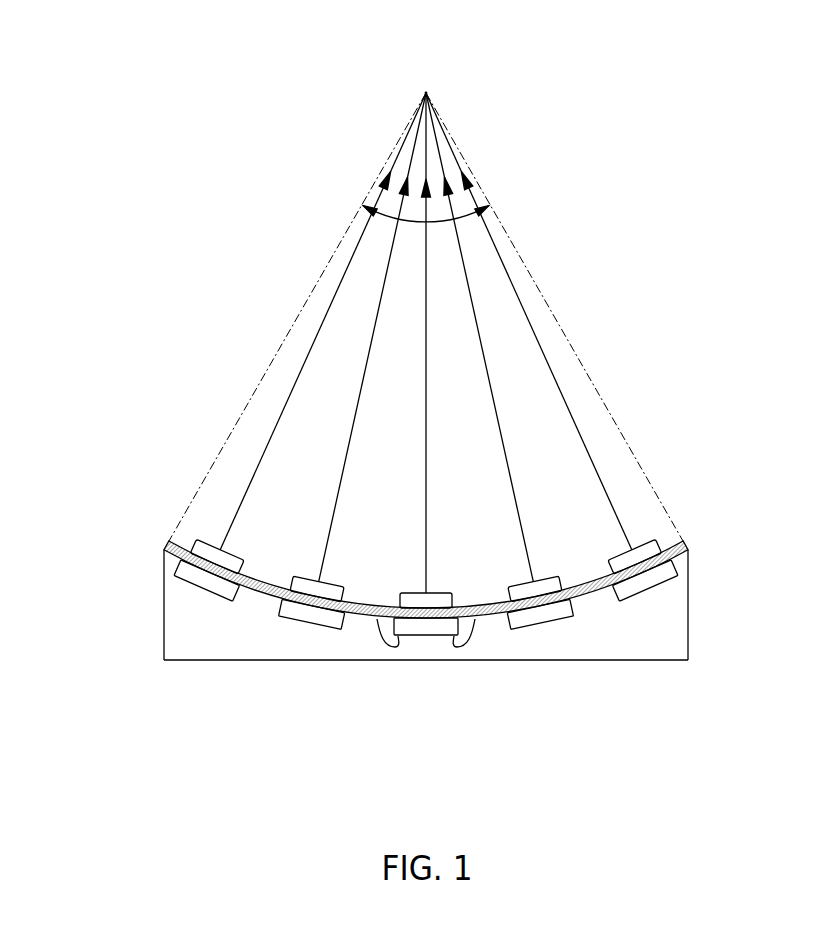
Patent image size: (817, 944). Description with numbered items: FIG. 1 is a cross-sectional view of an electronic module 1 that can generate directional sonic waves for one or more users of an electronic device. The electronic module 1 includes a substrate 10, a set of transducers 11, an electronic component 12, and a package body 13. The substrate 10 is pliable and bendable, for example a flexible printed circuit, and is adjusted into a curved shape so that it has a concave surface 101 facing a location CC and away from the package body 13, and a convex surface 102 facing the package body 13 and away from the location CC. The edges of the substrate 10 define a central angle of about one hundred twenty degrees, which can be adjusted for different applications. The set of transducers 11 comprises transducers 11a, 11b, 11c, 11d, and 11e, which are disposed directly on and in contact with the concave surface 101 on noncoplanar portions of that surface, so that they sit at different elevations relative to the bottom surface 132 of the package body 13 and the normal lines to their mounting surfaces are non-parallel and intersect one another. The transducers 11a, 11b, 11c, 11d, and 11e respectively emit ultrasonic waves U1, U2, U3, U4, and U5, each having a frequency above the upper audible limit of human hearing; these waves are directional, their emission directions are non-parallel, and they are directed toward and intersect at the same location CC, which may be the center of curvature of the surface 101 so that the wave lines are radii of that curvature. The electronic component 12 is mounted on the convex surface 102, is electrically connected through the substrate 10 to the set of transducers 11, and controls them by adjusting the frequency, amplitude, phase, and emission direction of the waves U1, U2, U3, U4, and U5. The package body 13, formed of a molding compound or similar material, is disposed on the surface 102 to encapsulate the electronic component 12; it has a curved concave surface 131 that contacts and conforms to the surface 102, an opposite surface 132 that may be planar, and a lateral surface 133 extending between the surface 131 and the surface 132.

The electronic module 1 is at (87, 40).
The substrate 10 is at (583, 590).
The surface 101 is at (672, 540).
The surface 102 is at (688, 554).
The set of transducers 11 is at (282, 768).
The transducer 11a is at (218, 557).
The transducer 11b is at (318, 588).
The transducer 11c is at (426, 600).
The transducer 11d is at (533, 590).
The transducer 11e is at (635, 558).
The electronic component 12 is at (434, 630).
The package body 13 is at (673, 607).
The surface 131 is at (183, 552).
The surface 132 is at (183, 660).
The lateral surface 133 is at (164, 612).
The location CC is at (425, 76).
The ultrasonic wave U1 is at (364, 228).
The ultrasonic wave U2 is at (382, 296).
The ultrasonic wave U3 is at (426, 362).
The ultrasonic wave U4 is at (470, 296).
The ultrasonic wave U5 is at (488, 228).